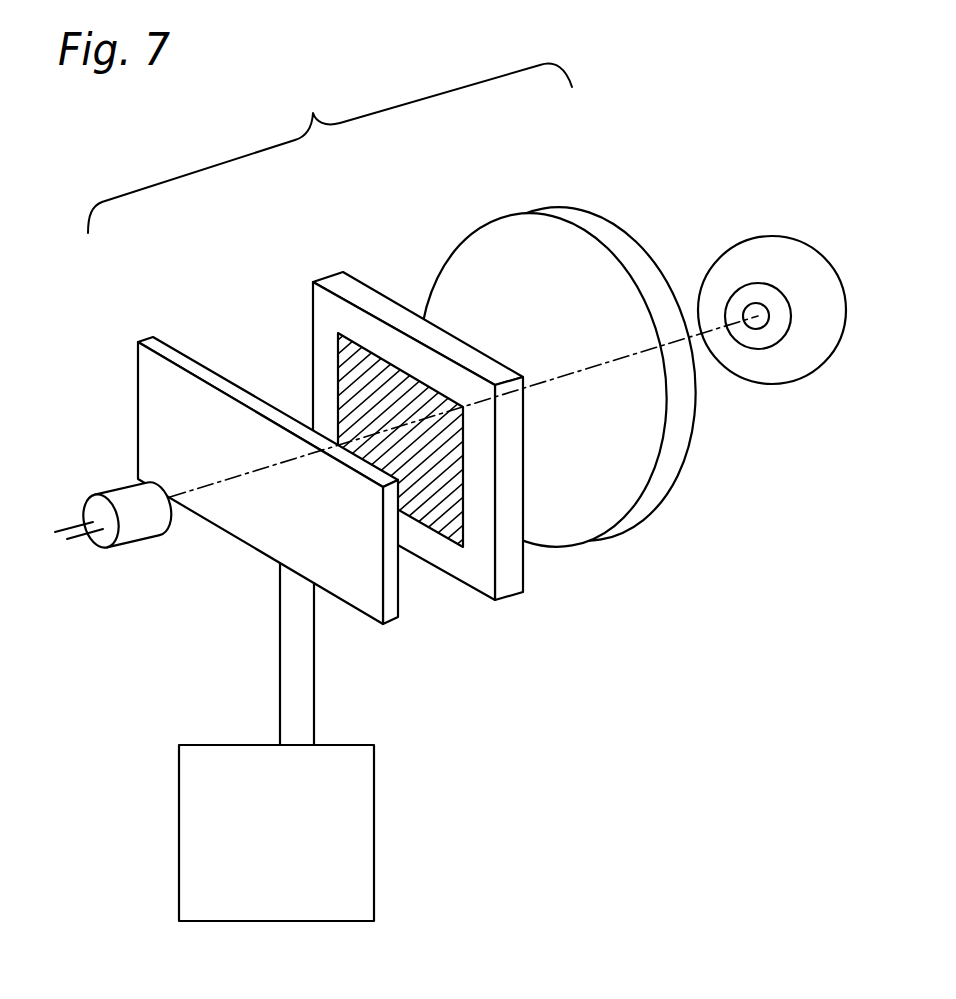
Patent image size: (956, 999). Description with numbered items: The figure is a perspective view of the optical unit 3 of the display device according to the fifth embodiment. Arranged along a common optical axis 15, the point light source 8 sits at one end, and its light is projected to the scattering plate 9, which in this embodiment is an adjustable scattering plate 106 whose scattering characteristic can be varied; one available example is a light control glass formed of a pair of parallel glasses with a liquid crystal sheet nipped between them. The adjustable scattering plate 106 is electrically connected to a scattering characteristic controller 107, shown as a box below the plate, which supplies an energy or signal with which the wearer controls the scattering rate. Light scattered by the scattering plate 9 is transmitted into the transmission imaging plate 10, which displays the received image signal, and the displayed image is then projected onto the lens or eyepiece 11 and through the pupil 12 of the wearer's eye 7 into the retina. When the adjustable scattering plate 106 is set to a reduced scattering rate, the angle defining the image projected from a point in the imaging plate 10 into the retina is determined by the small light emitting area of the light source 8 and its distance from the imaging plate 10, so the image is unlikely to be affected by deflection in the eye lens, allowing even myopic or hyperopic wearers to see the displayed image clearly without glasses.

The optical unit 3 is at (330, 148).
The eye 7 is at (772, 311).
The point light source 8 is at (130, 480).
The scattering plate 9 is at (134, 358).
The transmission imaging plate 10 is at (353, 377).
The eyepiece 11 is at (490, 233).
The pupil 12 is at (757, 329).
The optical axis 15 is at (572, 372).
The adjustable scattering plate 106 is at (239, 423).
The scattering characteristic controller 107 is at (179, 786).